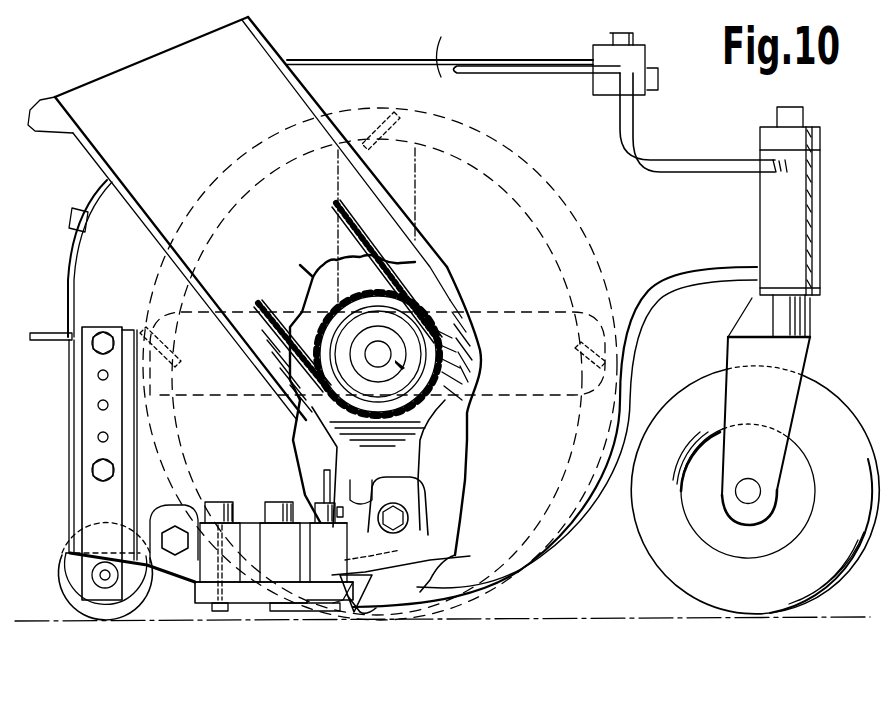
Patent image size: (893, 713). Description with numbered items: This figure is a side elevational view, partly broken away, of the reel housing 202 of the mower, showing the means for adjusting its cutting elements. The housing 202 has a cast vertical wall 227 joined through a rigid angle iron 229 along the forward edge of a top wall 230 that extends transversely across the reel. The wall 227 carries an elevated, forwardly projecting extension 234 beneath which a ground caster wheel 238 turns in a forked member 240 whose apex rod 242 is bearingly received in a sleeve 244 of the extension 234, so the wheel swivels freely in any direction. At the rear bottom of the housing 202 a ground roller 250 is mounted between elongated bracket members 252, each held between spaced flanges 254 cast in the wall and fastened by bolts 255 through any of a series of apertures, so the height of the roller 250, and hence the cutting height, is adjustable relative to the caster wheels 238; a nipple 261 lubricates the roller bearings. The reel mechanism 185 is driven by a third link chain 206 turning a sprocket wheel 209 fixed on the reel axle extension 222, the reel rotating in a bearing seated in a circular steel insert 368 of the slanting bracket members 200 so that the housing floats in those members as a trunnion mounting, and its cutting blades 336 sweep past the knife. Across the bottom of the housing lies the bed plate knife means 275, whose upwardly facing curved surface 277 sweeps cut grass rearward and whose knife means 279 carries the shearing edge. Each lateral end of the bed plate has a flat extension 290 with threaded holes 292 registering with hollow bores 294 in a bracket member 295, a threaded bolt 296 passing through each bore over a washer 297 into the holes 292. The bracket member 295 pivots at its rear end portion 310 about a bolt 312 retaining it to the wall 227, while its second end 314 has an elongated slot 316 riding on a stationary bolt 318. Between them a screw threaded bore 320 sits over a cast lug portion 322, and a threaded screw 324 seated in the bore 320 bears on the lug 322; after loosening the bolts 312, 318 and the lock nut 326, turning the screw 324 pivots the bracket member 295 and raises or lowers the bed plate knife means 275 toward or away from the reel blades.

The reel mechanism 185 is at (598, 238).
The bracket member 200 is at (232, 128).
The reel housing 202 is at (428, 72).
The third link chain 206 is at (342, 225).
The sprocket wheel 209 is at (378, 341).
The reel axle extension 222 is at (378, 354).
The vertical wall 227 is at (457, 52).
The angle iron 229 is at (648, 57).
The top wall 230 is at (522, 62).
The extension 234 is at (706, 188).
The ground caster wheel 238 is at (640, 556).
The forked member 240 is at (793, 367).
The rod 242 is at (805, 117).
The sleeve 244 is at (800, 204).
The ground roller 250 is at (98, 608).
The bracket member 252 is at (113, 605).
The flanges 254 is at (78, 432).
The bolt 255 is at (105, 332).
The nipple 261 is at (95, 580).
The bed plate knife means 275 is at (322, 650).
The curved surface 277 is at (330, 500).
The knife means 279 is at (338, 620).
The flat extension 290 is at (305, 605).
The threaded holes 292 is at (262, 600).
The hollow bores 294 is at (213, 606).
The bracket member 295 is at (263, 460).
The threaded bolt 296 is at (222, 503).
The washer 297 is at (280, 520).
The rear end portion 310 is at (186, 588).
The bolt 312 is at (173, 525).
The second end 314 is at (388, 485).
The elongated slot 316 is at (440, 474).
The stationary bolt 318 is at (405, 512).
The screw threaded bore 320 is at (401, 556).
The lug portion 322 is at (368, 625).
The threaded screw 324 is at (355, 486).
The lock nut 326 is at (327, 488).
The cutting blade 336 is at (450, 604).
The circular steel insert 368 is at (470, 325).